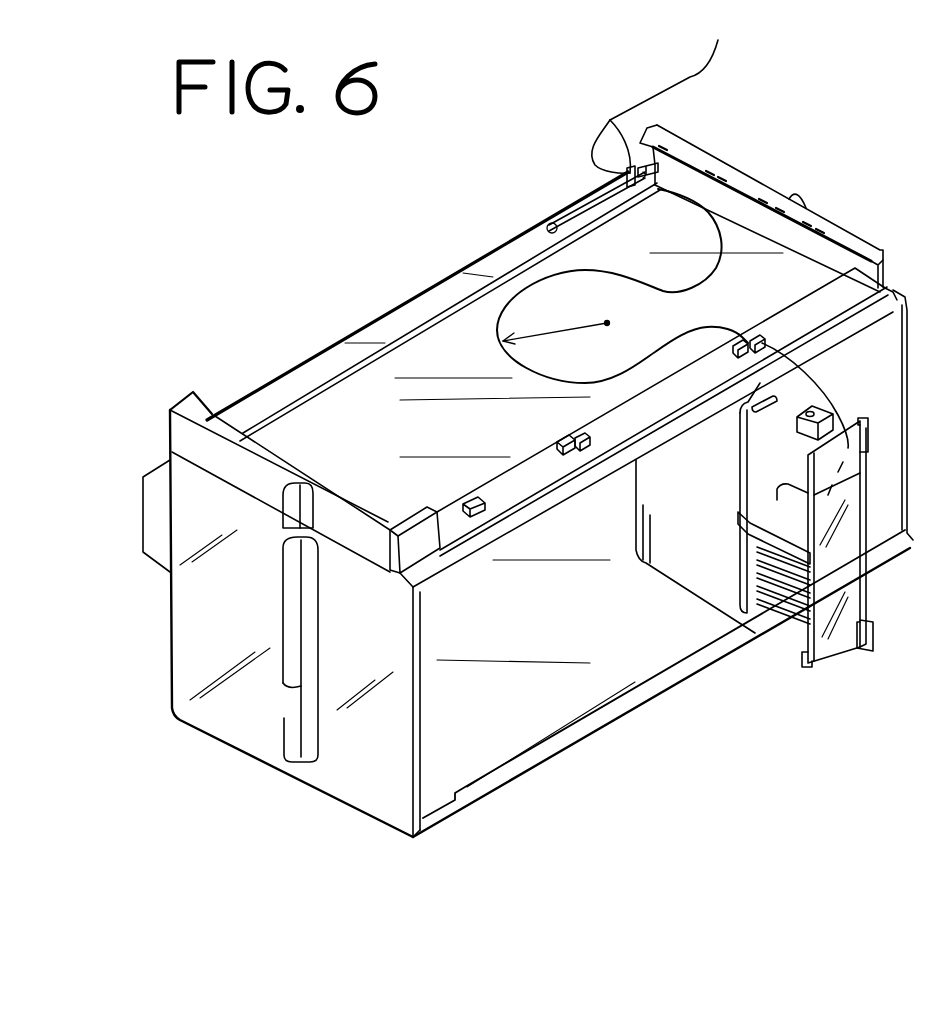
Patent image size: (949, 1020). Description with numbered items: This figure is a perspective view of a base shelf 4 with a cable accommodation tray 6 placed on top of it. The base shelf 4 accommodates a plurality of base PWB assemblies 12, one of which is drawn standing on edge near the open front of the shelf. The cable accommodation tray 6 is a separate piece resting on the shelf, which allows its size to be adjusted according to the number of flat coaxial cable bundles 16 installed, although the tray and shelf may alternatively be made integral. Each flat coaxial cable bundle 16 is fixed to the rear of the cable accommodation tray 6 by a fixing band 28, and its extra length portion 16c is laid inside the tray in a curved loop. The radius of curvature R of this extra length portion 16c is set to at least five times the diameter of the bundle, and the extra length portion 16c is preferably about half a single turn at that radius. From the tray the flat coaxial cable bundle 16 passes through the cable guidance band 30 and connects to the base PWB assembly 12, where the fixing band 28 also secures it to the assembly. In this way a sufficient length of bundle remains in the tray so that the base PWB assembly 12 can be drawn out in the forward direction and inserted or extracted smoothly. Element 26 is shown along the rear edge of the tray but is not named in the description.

The base shelf 4 is at (182, 598).
The cable accommodation tray 6 is at (560, 294).
The base PWB assembly 12 is at (853, 582).
The flat coaxial cable bundle 16 is at (687, 76).
The extra length portion 16c is at (528, 268).
The cable clamp 26 is at (580, 200).
The fixing band 28 is at (610, 120).
The cable guidance band 30 is at (764, 338).
The radius of curvature R is at (603, 323).